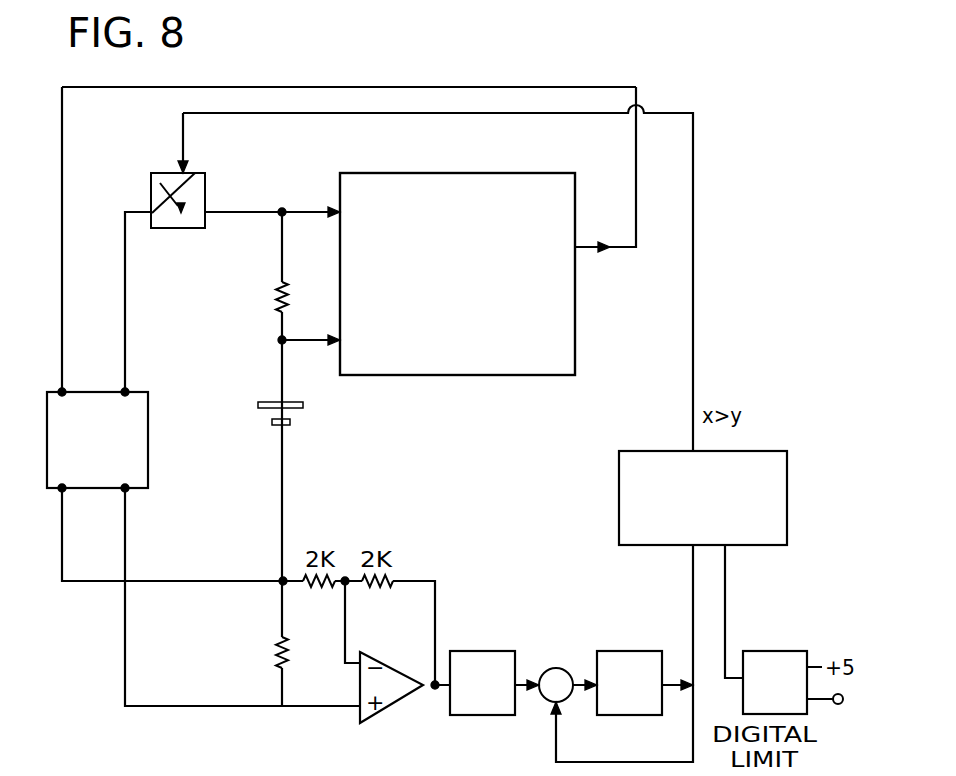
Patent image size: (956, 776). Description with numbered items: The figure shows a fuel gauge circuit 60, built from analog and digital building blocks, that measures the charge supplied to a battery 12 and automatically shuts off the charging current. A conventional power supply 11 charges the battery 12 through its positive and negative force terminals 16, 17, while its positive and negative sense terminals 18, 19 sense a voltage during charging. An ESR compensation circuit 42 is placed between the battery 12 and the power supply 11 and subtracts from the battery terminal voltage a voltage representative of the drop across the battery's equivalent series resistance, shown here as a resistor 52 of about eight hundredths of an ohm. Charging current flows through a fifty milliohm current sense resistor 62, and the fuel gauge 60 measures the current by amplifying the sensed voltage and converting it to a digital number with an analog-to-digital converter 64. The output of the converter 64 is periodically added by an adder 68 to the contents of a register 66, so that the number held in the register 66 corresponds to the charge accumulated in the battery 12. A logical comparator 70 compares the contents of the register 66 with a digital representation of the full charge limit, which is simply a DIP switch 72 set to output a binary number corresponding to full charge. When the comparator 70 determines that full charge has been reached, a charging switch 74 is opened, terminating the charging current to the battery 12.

The fuel gauge circuit 60 is at (293, 78).
The charging switch 74 is at (207, 197).
The ESR compensation circuit 42 is at (458, 173).
The 0.08 ohm resistor 52 is at (275, 293).
The battery 12 is at (257, 410).
The power supply 11 is at (148, 435).
The positive sense terminal 18 is at (62, 392).
The positive force terminal 16 is at (125, 392).
The negative sense terminal 19 is at (62, 488).
The negative force terminal 17 is at (125, 488).
The current sense resistor 62 is at (278, 643).
The analog-to-digital converter 64 is at (478, 651).
The adder 68 is at (558, 668).
The register 66 is at (637, 651).
The logical comparator 70 is at (645, 451).
The DIP switch 72 is at (789, 651).